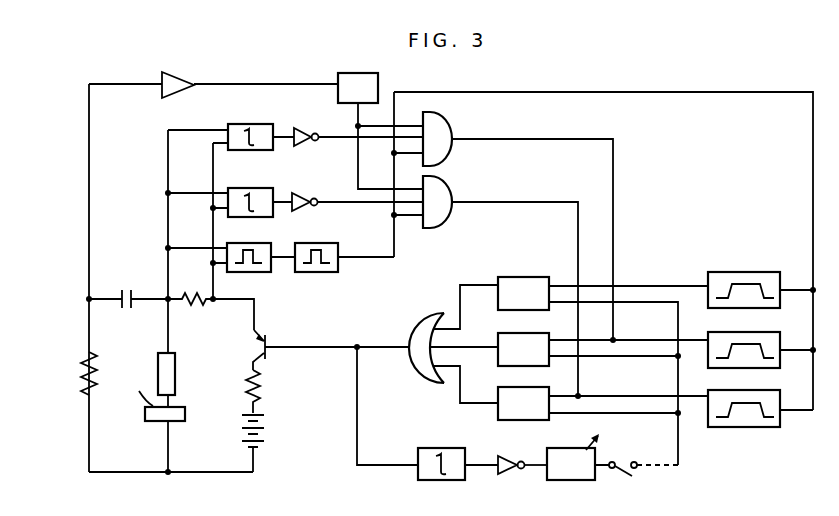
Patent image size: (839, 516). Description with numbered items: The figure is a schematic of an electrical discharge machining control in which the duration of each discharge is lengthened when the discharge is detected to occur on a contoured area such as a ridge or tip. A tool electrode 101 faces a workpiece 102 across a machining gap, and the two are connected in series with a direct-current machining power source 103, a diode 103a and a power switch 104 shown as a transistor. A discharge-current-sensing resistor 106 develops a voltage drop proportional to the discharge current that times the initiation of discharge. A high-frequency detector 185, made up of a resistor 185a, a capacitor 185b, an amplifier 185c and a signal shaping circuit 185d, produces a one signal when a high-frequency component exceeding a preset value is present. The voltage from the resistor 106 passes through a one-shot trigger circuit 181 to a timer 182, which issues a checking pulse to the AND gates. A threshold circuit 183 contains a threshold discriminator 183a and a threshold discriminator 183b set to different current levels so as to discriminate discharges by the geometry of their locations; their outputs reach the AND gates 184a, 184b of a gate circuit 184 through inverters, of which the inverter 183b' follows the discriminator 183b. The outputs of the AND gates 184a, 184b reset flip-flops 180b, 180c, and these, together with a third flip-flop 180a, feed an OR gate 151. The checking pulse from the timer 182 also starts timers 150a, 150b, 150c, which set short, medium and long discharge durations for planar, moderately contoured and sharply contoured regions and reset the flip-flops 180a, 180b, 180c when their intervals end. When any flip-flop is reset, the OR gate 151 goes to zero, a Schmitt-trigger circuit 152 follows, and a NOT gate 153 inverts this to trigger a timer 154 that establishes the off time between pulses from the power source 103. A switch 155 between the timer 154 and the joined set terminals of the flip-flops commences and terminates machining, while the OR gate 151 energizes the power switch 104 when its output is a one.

The high-frequency detector 185 is at (140, 174).
The resistor 185a is at (62, 373).
The capacitor 185b is at (128, 313).
The amplifier 185c is at (190, 75).
The signal shaping circuit 185d is at (362, 75).
The threshold circuit 183 is at (298, 174).
The threshold discriminator 183a is at (295, 125).
The threshold discriminator 183b is at (220, 191).
The inverter 183b' is at (348, 191).
The gate circuit 184 is at (528, 187).
The AND gate 184a is at (519, 226).
The AND gate 184b is at (502, 287).
The one-shot trigger circuit 181 is at (224, 271).
The timer 182 is at (332, 271).
The discharge-current-sensing resistor 106 is at (192, 315).
The tool electrode 101 is at (175, 378).
The workpiece 102 is at (192, 408).
The power switch 104 is at (305, 346).
The diode 103a is at (278, 391).
The direct-current machining power source 103 is at (270, 443).
The OR gate 151 is at (416, 330).
The flip-flop 180a is at (603, 361).
The flip-flop 180b is at (603, 347).
The flip-flop 180c is at (603, 401).
The timer 150a is at (762, 279).
The timer 150b is at (762, 339).
The timer 150c is at (760, 398).
The Schmitt-trigger circuit 152 is at (458, 478).
The NOT gate 153 is at (518, 482).
The timer 154 is at (578, 471).
The switch 155 is at (643, 485).